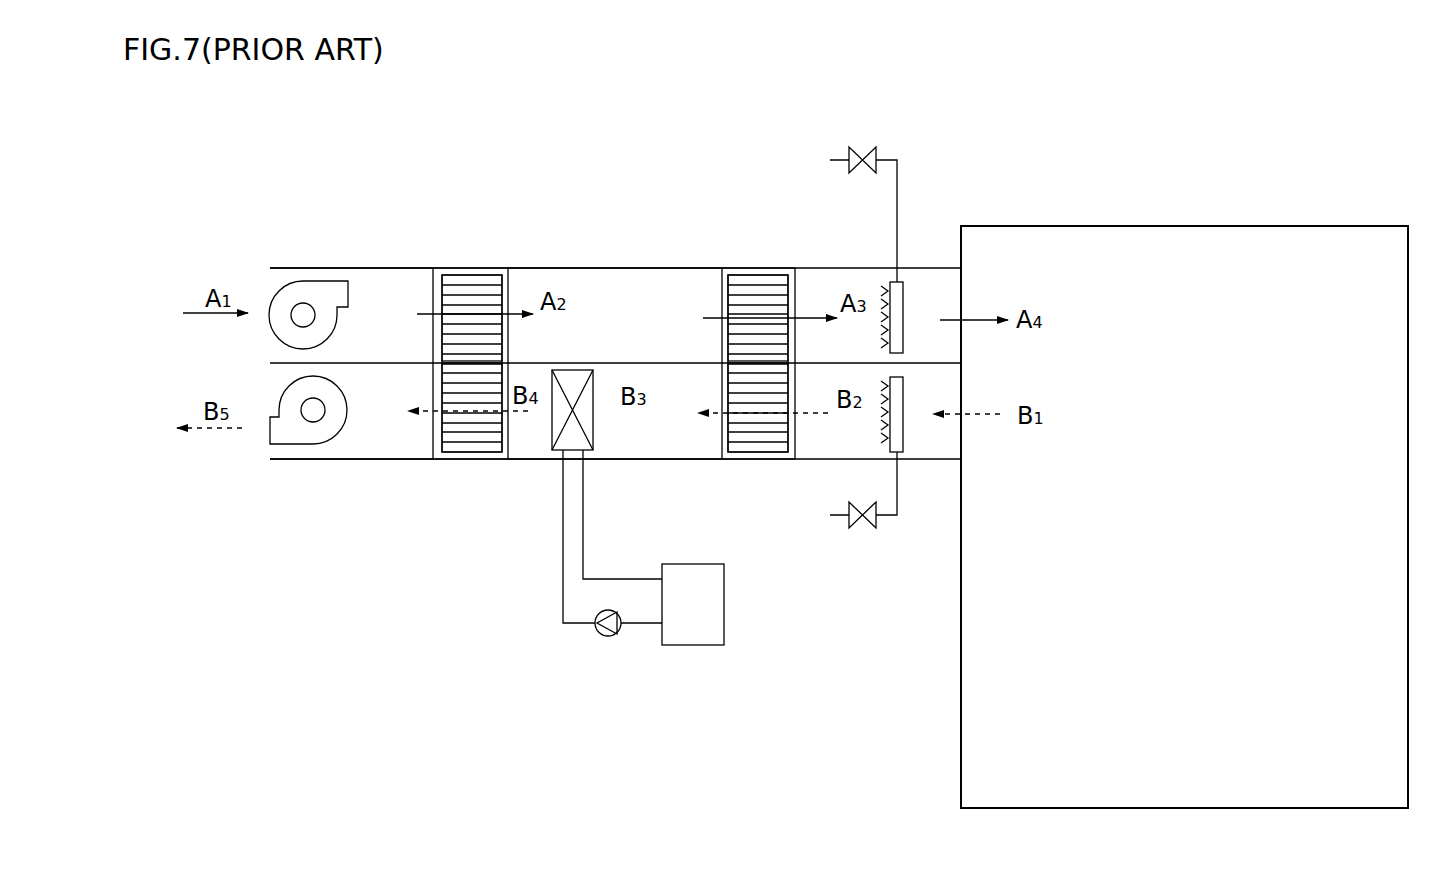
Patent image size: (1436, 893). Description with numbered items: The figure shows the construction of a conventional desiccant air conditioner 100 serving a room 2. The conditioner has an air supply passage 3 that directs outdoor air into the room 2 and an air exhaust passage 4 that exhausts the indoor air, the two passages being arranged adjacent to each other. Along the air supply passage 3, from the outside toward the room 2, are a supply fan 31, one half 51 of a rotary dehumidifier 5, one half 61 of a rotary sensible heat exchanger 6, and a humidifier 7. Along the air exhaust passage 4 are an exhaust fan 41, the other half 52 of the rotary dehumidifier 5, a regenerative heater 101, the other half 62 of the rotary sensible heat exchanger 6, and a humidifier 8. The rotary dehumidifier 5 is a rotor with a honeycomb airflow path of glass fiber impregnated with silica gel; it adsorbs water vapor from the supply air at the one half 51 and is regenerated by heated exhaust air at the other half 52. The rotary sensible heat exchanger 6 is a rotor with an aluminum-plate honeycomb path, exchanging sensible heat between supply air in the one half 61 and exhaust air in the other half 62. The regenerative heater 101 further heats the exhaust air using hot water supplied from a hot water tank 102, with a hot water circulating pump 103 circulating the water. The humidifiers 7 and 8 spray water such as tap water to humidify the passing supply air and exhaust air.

The room 2 is at (1045, 226).
The air supply passage 3 is at (396, 268).
The air exhaust passage 4 is at (377, 459).
The rotary dehumidifier 5 is at (466, 268).
The rotary sensible heat exchanger 6 is at (752, 268).
The humidifier 7 is at (905, 297).
The humidifier 8 is at (903, 431).
The supply fan 31 is at (303, 281).
The exhaust fan 41 is at (300, 444).
The one half of rotary dehumidifier 51 is at (508, 297).
The other half of rotary dehumidifier 52 is at (433, 441).
The one half of rotary sensible heat exchanger 61 is at (722, 300).
The other half of rotary sensible heat exchanger 62 is at (722, 438).
The desiccant air conditioner 100 is at (598, 251).
The regenerative heater 101 is at (552, 428).
The hot water tank 102 is at (724, 600).
The hot water circulating pump 103 is at (605, 637).